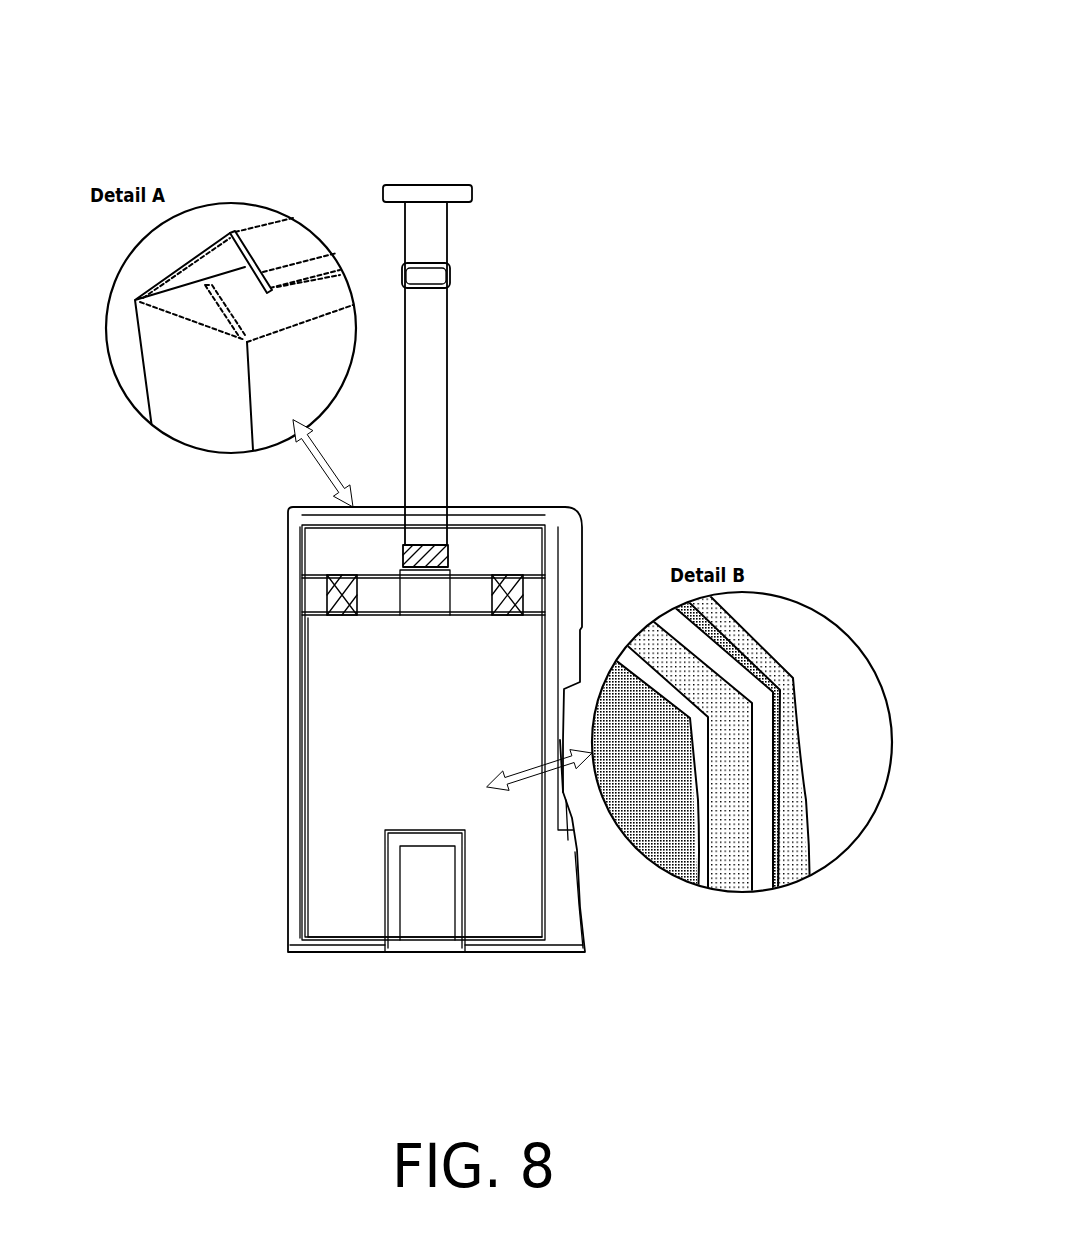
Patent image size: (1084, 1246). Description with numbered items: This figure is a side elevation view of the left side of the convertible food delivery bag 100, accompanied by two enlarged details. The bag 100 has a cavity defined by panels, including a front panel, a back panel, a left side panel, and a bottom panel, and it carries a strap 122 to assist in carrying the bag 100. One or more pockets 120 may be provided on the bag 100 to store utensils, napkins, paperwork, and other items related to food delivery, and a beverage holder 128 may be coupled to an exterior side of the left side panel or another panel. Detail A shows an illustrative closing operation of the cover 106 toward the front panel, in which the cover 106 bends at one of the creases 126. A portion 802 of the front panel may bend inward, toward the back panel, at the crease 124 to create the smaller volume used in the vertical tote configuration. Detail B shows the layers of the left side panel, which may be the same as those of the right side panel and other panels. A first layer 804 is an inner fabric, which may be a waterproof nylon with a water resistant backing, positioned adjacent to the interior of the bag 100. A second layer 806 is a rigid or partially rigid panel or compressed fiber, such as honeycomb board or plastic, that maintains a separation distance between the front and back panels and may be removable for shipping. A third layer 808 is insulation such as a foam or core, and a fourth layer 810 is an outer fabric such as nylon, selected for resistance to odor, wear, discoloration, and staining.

The bag 100 is at (312, 28).
The portion 802 is at (232, 300).
The cover 106 is at (228, 233).
The creases 126 is at (278, 222).
The strap 122 is at (447, 423).
The crease 124 is at (307, 322).
The beverage holder 128 is at (443, 892).
The pockets 120 is at (582, 908).
The first layer 804 is at (732, 625).
The second layer 806 is at (732, 657).
The third layer 808 is at (732, 690).
The fourth layer 810 is at (695, 770).